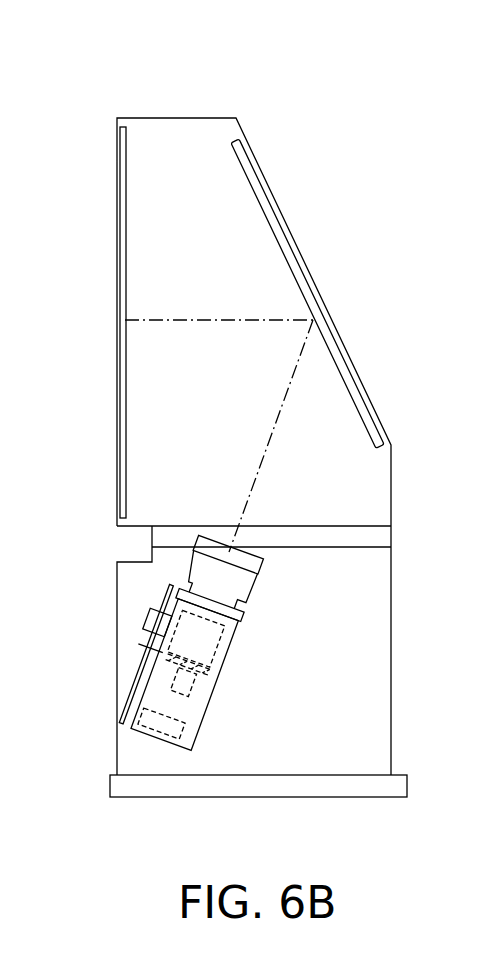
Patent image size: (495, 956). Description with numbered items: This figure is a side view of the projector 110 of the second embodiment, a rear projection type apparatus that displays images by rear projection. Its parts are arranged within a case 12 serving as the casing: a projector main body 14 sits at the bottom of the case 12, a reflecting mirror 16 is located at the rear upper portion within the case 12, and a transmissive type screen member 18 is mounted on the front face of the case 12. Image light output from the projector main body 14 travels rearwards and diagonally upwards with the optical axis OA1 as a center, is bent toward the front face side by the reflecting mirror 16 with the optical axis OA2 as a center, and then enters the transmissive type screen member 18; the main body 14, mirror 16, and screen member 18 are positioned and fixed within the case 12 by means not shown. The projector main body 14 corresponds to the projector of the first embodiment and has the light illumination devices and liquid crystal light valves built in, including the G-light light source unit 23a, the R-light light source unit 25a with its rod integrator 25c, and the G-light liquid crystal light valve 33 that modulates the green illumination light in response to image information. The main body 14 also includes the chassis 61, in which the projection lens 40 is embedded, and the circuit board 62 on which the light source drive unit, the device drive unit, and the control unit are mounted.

The projector 110 is at (258, 430).
The case 12 is at (375, 665).
The transmissive type screen member 18 is at (127, 142).
The reflecting mirror 16 is at (342, 362).
The optical axis OA1 is at (274, 434).
The optical axis OA2 is at (206, 318).
The projector main body 14 is at (231, 688).
The projection lens 40 is at (256, 578).
The chassis 61 is at (198, 723).
The R-light light source unit 25a is at (216, 642).
The G-light liquid crystal light valve 33 is at (210, 677).
The rod integrator 25c is at (192, 686).
The G-light light source unit 23a is at (165, 735).
The circuit board 62 is at (130, 685).